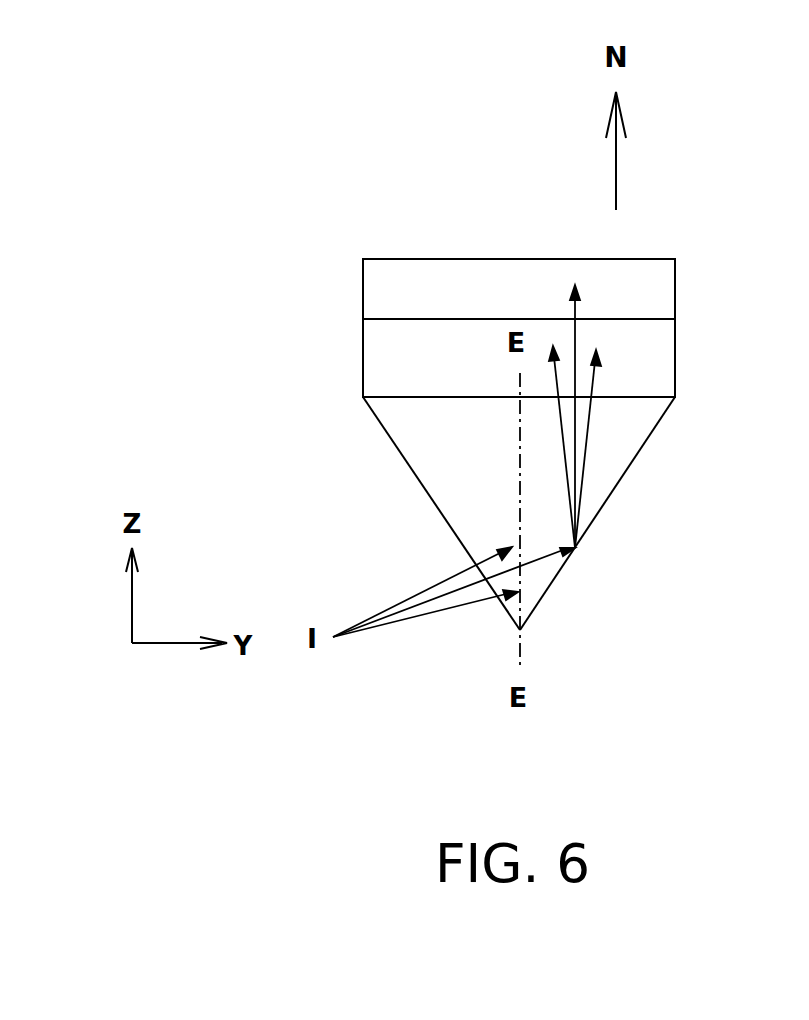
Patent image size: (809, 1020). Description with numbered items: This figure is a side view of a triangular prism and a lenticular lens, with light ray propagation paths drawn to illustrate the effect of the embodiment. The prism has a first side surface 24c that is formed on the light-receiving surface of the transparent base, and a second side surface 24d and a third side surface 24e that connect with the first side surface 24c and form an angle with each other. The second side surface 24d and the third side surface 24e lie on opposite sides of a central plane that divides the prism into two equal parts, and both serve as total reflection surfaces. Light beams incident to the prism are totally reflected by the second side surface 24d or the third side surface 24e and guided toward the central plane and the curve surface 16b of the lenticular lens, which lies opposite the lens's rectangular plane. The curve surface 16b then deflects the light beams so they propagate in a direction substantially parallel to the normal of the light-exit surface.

The curve surface 16b is at (472, 259).
The first side surface 24c is at (418, 397).
The second side surface 24d is at (422, 488).
The third side surface 24e is at (597, 515).